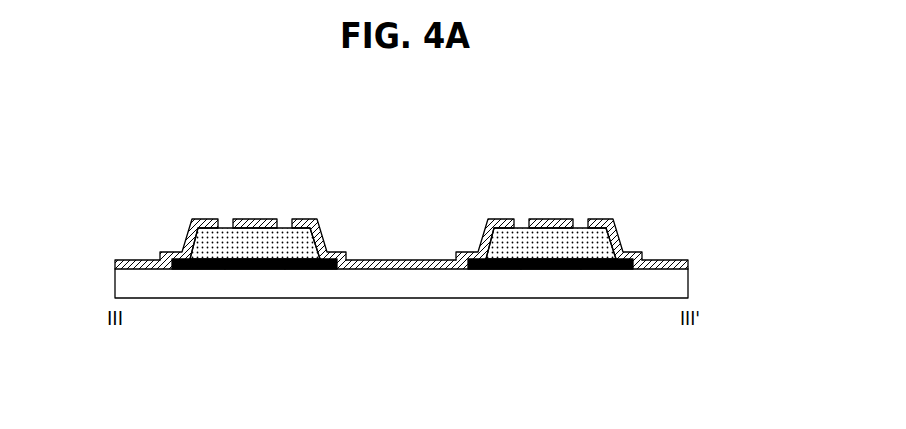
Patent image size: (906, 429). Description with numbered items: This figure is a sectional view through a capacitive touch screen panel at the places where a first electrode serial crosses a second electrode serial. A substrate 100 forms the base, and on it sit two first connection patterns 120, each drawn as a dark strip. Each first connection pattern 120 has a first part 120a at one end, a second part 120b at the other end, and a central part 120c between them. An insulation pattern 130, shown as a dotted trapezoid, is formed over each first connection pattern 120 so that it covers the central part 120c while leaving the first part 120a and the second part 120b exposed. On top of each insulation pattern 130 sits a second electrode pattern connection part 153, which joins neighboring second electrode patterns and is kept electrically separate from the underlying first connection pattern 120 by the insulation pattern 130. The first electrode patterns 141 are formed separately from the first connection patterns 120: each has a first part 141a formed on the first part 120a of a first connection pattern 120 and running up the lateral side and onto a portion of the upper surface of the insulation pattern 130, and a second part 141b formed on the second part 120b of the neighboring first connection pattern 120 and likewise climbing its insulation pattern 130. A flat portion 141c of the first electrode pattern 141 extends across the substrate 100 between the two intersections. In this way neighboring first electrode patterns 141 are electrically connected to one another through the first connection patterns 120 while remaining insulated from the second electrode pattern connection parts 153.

The substrate 100 is at (401, 287).
The first connection pattern 120 is at (402, 329).
The first part of the first connection pattern 120a is at (466, 308).
The second part of the first connection pattern 120b is at (182, 270).
The central part of the first connection pattern 120c is at (248, 270).
The insulation pattern 130 is at (210, 243).
The first electrode pattern 141 is at (401, 188).
The first part of the first electrode pattern 141a is at (305, 219).
The second part of the first electrode pattern 141b is at (205, 219).
The portion of the first electrode pattern 141c is at (401, 208).
The second electrode pattern connection part 153 is at (248, 219).